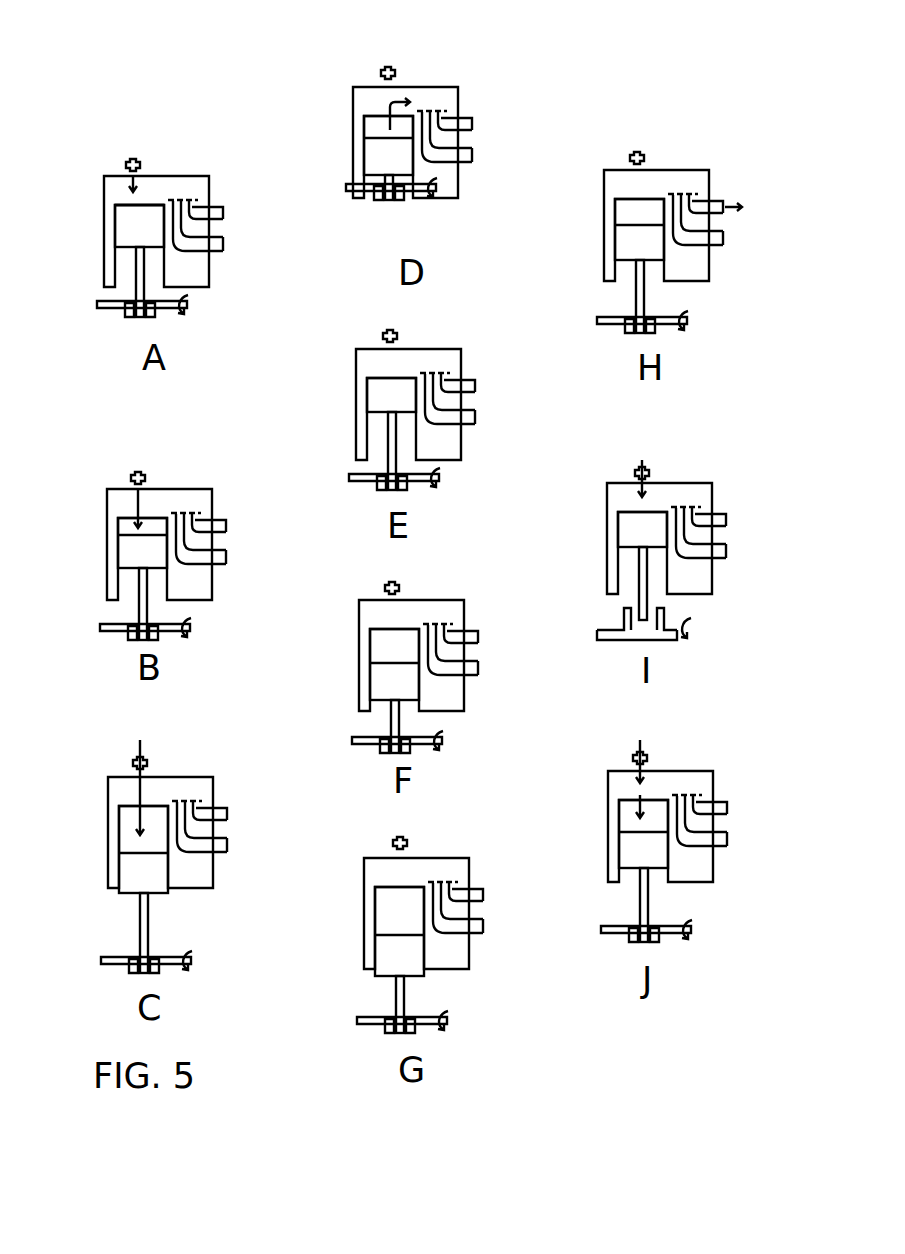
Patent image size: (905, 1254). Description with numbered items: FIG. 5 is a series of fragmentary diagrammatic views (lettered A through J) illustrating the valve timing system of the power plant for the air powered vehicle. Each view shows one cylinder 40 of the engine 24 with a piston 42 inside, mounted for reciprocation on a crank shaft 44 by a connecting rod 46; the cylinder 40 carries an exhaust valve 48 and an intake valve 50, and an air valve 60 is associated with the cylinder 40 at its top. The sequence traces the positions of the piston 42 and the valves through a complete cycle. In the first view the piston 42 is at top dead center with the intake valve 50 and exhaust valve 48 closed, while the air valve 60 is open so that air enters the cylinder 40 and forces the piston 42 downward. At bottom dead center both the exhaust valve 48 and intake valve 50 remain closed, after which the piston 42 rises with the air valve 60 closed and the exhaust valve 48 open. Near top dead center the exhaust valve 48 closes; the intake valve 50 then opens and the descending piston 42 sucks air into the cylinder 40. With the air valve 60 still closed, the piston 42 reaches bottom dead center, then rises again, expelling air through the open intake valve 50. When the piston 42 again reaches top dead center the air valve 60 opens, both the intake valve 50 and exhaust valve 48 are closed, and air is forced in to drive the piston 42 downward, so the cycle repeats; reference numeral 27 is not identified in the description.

The engine 24 is at (152, 183).
The cylinder 27 is at (412, 93).
The cylinder 40 is at (117, 273).
The piston 42 is at (125, 222).
The crank shaft 44 is at (165, 313).
The connecting rod 46 is at (142, 270).
The exhaust valve 48 is at (173, 198).
The intake valve 50 is at (197, 198).
The air valve 60 is at (130, 162).